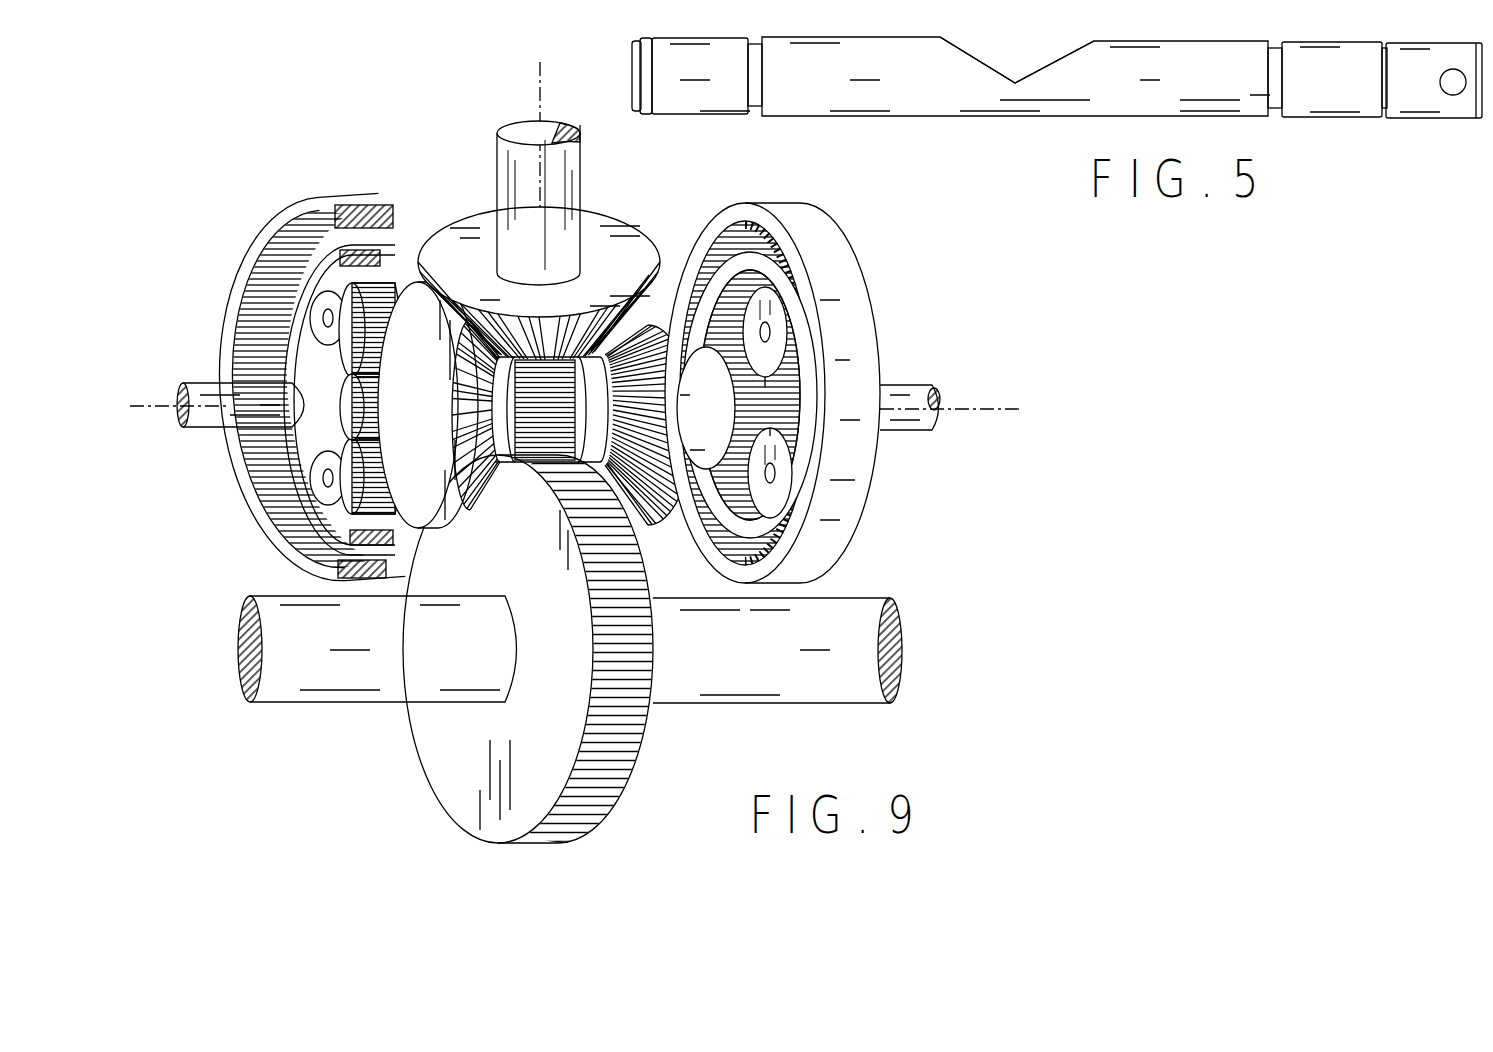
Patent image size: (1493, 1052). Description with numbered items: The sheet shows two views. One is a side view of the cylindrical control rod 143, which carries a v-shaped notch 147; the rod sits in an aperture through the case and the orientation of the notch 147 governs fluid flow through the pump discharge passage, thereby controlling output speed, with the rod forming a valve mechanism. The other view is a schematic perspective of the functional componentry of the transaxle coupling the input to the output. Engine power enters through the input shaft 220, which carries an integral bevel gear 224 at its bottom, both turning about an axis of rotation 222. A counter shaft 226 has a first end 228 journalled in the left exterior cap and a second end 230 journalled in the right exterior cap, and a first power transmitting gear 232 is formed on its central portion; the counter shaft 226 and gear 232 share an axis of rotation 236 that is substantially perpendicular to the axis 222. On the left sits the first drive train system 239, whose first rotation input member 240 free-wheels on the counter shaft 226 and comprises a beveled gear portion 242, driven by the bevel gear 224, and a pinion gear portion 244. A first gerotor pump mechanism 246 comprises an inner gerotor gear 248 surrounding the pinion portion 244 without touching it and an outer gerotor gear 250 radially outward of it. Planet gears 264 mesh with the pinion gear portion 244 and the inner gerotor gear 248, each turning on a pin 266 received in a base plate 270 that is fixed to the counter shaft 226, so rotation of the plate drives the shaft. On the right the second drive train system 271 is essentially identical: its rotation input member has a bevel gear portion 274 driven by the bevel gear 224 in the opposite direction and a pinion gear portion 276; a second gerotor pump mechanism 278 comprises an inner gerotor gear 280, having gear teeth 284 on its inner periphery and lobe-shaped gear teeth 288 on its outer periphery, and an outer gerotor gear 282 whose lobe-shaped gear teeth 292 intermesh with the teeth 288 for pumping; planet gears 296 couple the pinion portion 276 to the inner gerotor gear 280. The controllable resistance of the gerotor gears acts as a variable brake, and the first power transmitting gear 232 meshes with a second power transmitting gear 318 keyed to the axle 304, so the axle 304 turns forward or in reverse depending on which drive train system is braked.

In FIG. 5, the control rod 143 is at (906, 28).
In FIG. 5, the v-shaped notch 147 is at (1020, 60).
In FIG. 9, the input shaft 220 is at (506, 141).
In FIG. 9, the axis of rotation 222 is at (537, 103).
In FIG. 9, the bevel gear 224 is at (603, 222).
In FIG. 9, the counter shaft 226 is at (896, 392).
In FIG. 9, the first end 228 is at (206, 386).
In FIG. 9, the second end 230 is at (925, 392).
In FIG. 9, the first power transmitting gear 232 is at (572, 403).
In FIG. 9, the axis of rotation 236 is at (995, 408).
In FIG. 9, the first drive train system 239 is at (323, 367).
In FIG. 9, the first rotation input member 240 is at (452, 338).
In FIG. 9, the beveled gear portion 242 is at (478, 455).
In FIG. 9, the pinion gear portion 244 is at (412, 436).
In FIG. 9, the first gerotor pump mechanism 246 is at (363, 198).
In FIG. 9, the inner gerotor gear 248 is at (390, 272).
In FIG. 9, the outer gerotor gear 250 is at (302, 214).
In FIG. 9, the planet gears 264 is at (300, 350).
In FIG. 9, the pin 266 is at (324, 316).
In FIG. 9, the base plate 270 is at (285, 452).
In FIG. 9, the second drive train system 271 is at (792, 366).
In FIG. 9, the bevel gear portion 274 is at (655, 385).
In FIG. 9, the pinion gear portion 276 is at (792, 405).
In FIG. 9, the second gerotor pump mechanism 278 is at (860, 263).
In FIG. 9, the inner gerotor gear 280 is at (746, 343).
In FIG. 9, the outer gerotor gear 282 is at (746, 208).
In FIG. 9, the gear teeth 284 is at (714, 308).
In FIG. 9, the lobe-shaped gear teeth 288 is at (807, 297).
In FIG. 9, the lobe-shaped gear teeth 292 is at (728, 264).
In FIG. 9, the planet gears 296 is at (785, 488).
In FIG. 9, the axle 304 is at (858, 600).
In FIG. 9, the second power transmitting gear 318 is at (643, 638).